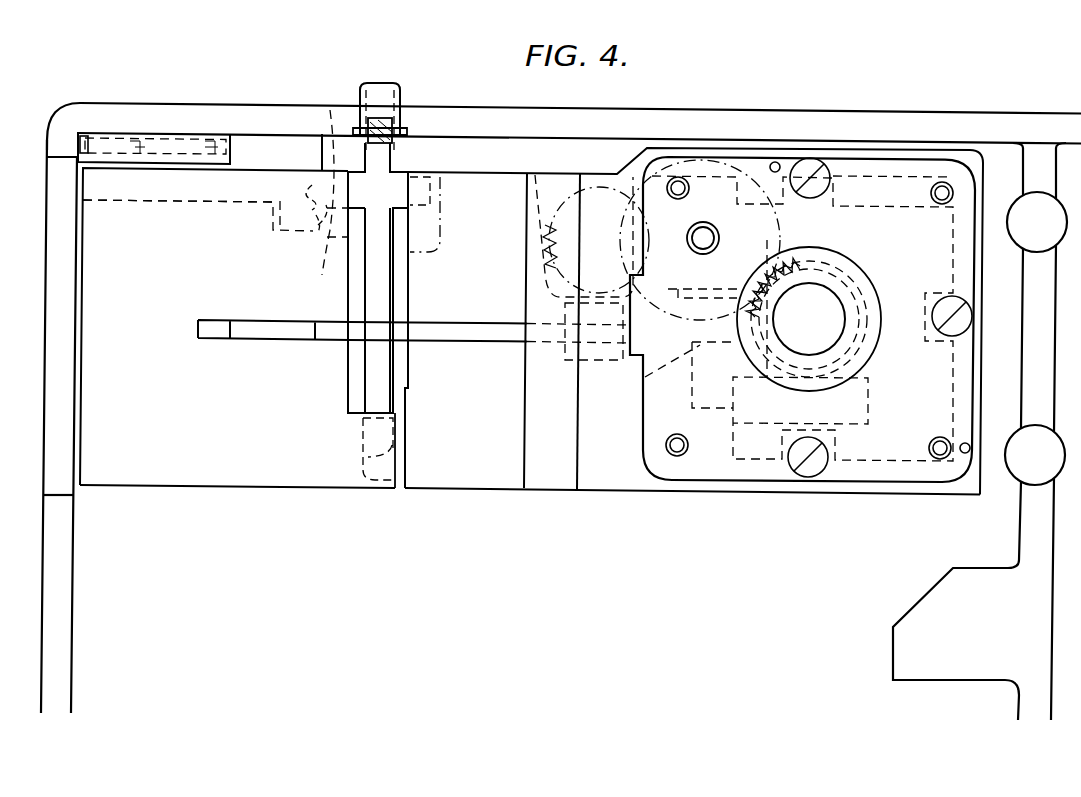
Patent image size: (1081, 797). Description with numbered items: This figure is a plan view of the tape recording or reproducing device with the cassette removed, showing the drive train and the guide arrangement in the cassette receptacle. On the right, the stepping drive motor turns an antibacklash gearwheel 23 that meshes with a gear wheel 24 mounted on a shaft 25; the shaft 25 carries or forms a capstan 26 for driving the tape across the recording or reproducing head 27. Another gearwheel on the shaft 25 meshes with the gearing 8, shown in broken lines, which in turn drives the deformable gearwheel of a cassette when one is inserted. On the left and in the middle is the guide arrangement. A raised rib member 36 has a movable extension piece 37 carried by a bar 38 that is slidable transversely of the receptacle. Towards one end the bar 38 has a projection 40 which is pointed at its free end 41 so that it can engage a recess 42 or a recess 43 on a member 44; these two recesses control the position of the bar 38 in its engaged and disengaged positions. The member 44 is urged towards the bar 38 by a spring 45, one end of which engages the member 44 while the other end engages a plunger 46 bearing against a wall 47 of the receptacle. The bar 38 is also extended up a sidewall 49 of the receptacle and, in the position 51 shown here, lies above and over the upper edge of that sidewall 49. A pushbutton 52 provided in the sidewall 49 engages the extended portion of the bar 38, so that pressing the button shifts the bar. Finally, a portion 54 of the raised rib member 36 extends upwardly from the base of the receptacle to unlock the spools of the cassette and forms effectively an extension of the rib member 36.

The gearing 8 is at (595, 190).
The antibacklash gearwheel 23 is at (852, 345).
The gear wheel 24 is at (702, 160).
The shaft 25 is at (707, 230).
The capstan 26 is at (716, 233).
The recording or reproducing head 27 is at (645, 377).
The raised rib member 36 is at (487, 338).
The movable extension piece 37 is at (385, 332).
The bar 38 is at (383, 273).
The projection 40 is at (333, 128).
The free end 41 is at (324, 245).
The recess 42 is at (310, 186).
The recess 43 is at (316, 198).
The member 44 is at (262, 157).
The spring 45 is at (172, 145).
The plunger 46 is at (88, 136).
The wall 47 is at (64, 136).
The sidewall 49 is at (575, 117).
The position 51 is at (383, 138).
The pushbutton 52 is at (392, 93).
The portion 54 is at (287, 338).